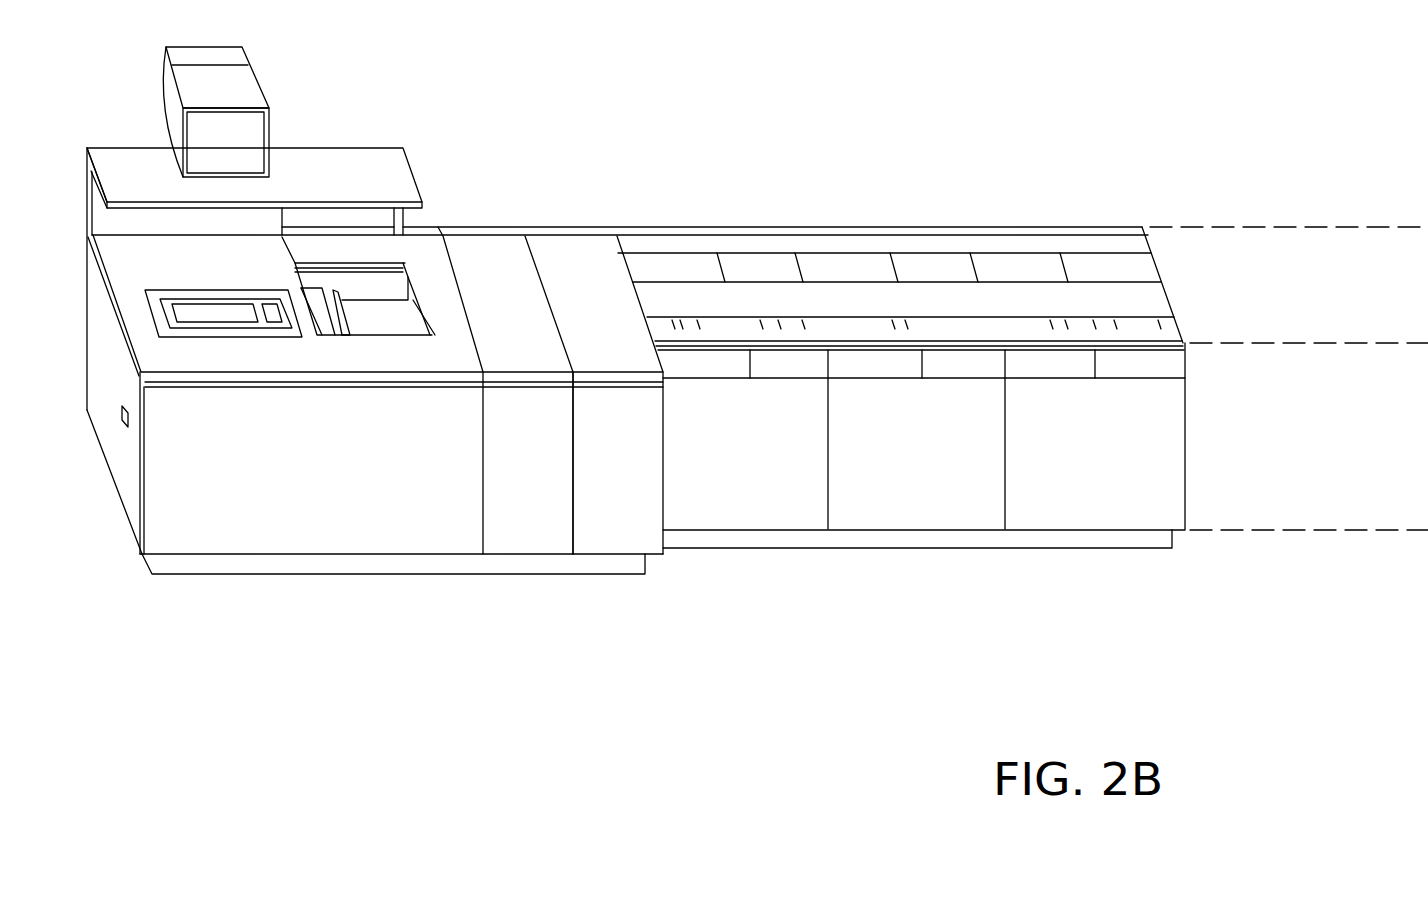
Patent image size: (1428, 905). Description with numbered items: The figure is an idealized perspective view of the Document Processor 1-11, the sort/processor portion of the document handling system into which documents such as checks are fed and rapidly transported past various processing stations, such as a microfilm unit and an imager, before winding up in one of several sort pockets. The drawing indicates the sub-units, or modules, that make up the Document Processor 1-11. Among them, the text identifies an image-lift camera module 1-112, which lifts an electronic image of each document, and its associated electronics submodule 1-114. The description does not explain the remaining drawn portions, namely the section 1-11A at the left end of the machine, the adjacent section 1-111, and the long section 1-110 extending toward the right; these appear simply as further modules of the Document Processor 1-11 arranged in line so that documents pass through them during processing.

The Document Processor 1-11 is at (757, 337).
The conveyor section 1-110 is at (585, 227).
The main unit 1-11A is at (355, 547).
The first processing section 1-111 is at (532, 543).
The image-lift camera module 1-112 is at (630, 540).
The electronics submodule 1-114 is at (798, 493).